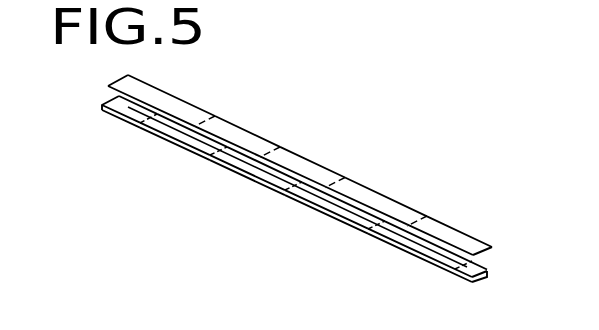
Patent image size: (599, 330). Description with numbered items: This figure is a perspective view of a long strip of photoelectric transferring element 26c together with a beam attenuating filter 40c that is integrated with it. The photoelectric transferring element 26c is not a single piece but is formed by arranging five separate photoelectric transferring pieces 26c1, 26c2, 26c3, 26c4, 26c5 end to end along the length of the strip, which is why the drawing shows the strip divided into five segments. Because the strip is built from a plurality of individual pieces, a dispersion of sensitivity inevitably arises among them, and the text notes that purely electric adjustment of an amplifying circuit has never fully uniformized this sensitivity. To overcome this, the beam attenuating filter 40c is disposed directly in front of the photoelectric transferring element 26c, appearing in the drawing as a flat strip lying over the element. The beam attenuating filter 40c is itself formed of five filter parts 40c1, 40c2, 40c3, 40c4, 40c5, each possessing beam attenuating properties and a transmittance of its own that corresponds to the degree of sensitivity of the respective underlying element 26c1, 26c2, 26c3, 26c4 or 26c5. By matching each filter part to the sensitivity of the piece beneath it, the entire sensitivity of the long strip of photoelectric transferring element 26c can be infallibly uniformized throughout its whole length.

The beam attenuating filter 40c is at (314, 157).
The filter part 40c1 is at (190, 105).
The filter part 40c2 is at (268, 137).
The filter part 40c3 is at (328, 167).
The filter part 40c4 is at (400, 203).
The filter part 40c5 is at (473, 240).
The photoelectric transferring element 26c is at (282, 206).
The photoelectric transferring piece 26c1 is at (133, 126).
The photoelectric transferring piece 26c2 is at (207, 160).
The photoelectric transferring piece 26c3 is at (275, 192).
The photoelectric transferring piece 26c4 is at (368, 226).
The photoelectric transferring piece 26c5 is at (440, 264).